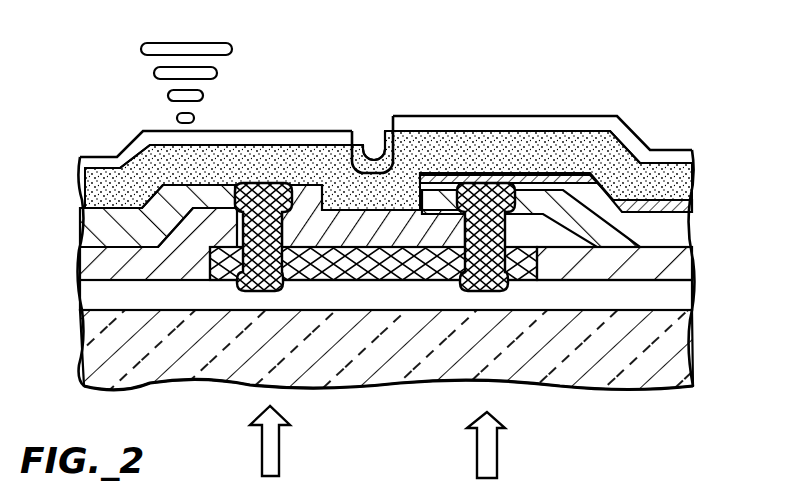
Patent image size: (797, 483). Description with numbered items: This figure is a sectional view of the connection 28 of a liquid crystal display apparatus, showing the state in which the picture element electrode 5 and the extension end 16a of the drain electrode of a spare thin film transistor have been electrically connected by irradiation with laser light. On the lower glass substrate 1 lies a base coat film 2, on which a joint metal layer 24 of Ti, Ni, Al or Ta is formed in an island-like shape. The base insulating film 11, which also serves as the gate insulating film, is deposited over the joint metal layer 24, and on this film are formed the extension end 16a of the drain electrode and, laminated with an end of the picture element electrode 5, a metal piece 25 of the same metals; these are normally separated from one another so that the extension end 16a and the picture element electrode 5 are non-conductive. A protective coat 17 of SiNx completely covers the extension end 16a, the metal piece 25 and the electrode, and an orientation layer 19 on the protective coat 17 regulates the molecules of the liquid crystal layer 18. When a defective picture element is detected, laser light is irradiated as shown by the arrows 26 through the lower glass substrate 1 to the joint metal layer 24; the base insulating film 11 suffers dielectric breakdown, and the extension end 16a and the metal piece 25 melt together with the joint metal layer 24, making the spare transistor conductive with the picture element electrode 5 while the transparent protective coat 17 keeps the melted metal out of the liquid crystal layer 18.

The lower glass substrate 1 is at (80, 360).
The base coat film 2 is at (80, 301).
The picture element electrode 5 is at (700, 210).
The base insulating film 11 is at (80, 266).
The extension end of drain electrode 16a is at (300, 184).
The protective coat 17 is at (85, 190).
The liquid crystal layer 18 is at (198, 44).
The orientation layer 19 is at (80, 157).
The joint metal layer 24 is at (235, 276).
The metal piece 25 is at (700, 235).
The arrows 26 is at (262, 448).
The connection 28 is at (373, 110).